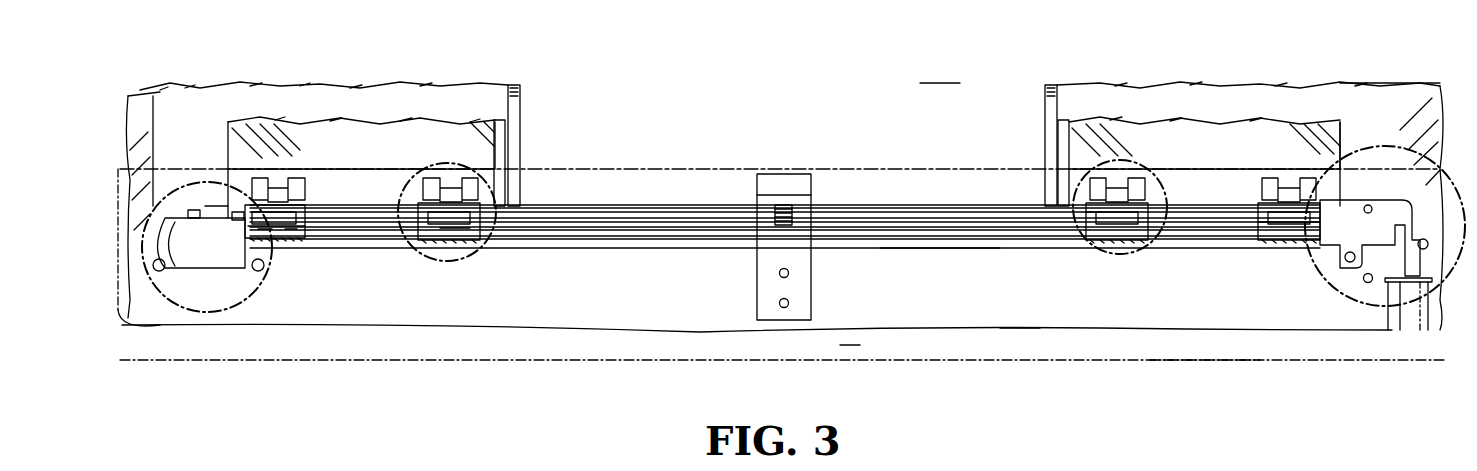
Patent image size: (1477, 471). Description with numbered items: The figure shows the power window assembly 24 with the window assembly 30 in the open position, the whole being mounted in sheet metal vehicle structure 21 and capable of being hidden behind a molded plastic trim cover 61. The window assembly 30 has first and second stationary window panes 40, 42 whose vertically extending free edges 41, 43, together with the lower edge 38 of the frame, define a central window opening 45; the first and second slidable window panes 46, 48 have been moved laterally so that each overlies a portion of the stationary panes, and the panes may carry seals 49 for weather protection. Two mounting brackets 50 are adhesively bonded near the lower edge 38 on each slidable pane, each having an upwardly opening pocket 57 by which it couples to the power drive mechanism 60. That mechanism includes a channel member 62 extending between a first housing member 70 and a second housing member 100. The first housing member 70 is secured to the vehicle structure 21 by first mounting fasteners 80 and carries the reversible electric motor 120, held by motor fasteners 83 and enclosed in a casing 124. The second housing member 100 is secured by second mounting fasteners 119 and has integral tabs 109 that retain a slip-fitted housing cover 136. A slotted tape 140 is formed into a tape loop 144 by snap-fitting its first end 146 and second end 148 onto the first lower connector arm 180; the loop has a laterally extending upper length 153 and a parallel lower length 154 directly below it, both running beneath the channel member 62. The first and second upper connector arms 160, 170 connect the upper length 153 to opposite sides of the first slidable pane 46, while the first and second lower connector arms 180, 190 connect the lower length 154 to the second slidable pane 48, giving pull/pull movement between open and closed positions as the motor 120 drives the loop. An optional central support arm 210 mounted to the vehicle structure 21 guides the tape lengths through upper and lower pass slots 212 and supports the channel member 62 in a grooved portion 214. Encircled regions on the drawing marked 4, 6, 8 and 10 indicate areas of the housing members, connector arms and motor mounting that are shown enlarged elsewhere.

The detail view circle 4 is at (181, 310).
The detail view circle 6 is at (430, 264).
The detail view circle 8 is at (1105, 252).
The detail view circle 10 is at (1352, 314).
The sheet metal vehicle structure 21 is at (1020, 305).
The power window assembly 24 is at (620, 367).
The window assembly 30 is at (250, 65).
The lower edge 38 is at (152, 132).
The first stationary window pane 40 is at (1250, 95).
The free edge 41 is at (1043, 92).
The second stationary window pane 42 is at (440, 100).
The free edge 43 is at (520, 110).
The central window opening 45 is at (930, 70).
The first slidable window pane 46 is at (1147, 135).
The second slidable window pane 48 is at (320, 140).
The seals 49 is at (516, 150).
The mounting brackets 50 is at (435, 196).
The upwardly opening pocket 57 is at (283, 185).
The power drive mechanism 60 is at (850, 335).
The trim cover 61 is at (1203, 348).
The channel member 62 is at (965, 210).
The first housing member 70 is at (1350, 208).
The first mounting fasteners 80 is at (1345, 258).
The motor fasteners 83 is at (1370, 205).
The second housing member 100 is at (178, 150).
The integral tabs 109 is at (238, 212).
The second mounting fasteners 119 is at (160, 270).
The electric motor 120 is at (1402, 320).
The casing 124 is at (1403, 172).
The housing cover 136 is at (210, 268).
The tape 140 is at (665, 230).
The tape loop 144 is at (975, 242).
The first end 146 is at (285, 238).
The second end 148 is at (265, 233).
The upper length 153 is at (680, 230).
The lower length 154 is at (585, 250).
The first upper connector arm 160 is at (1262, 212).
The second upper connector arm 170 is at (1090, 205).
The first lower connector arm 180 is at (478, 212).
The second lower connector arm 190 is at (307, 236).
The central support arm 210 is at (790, 172).
The pass slots 212 is at (775, 240).
The grooved portion 214 is at (795, 214).